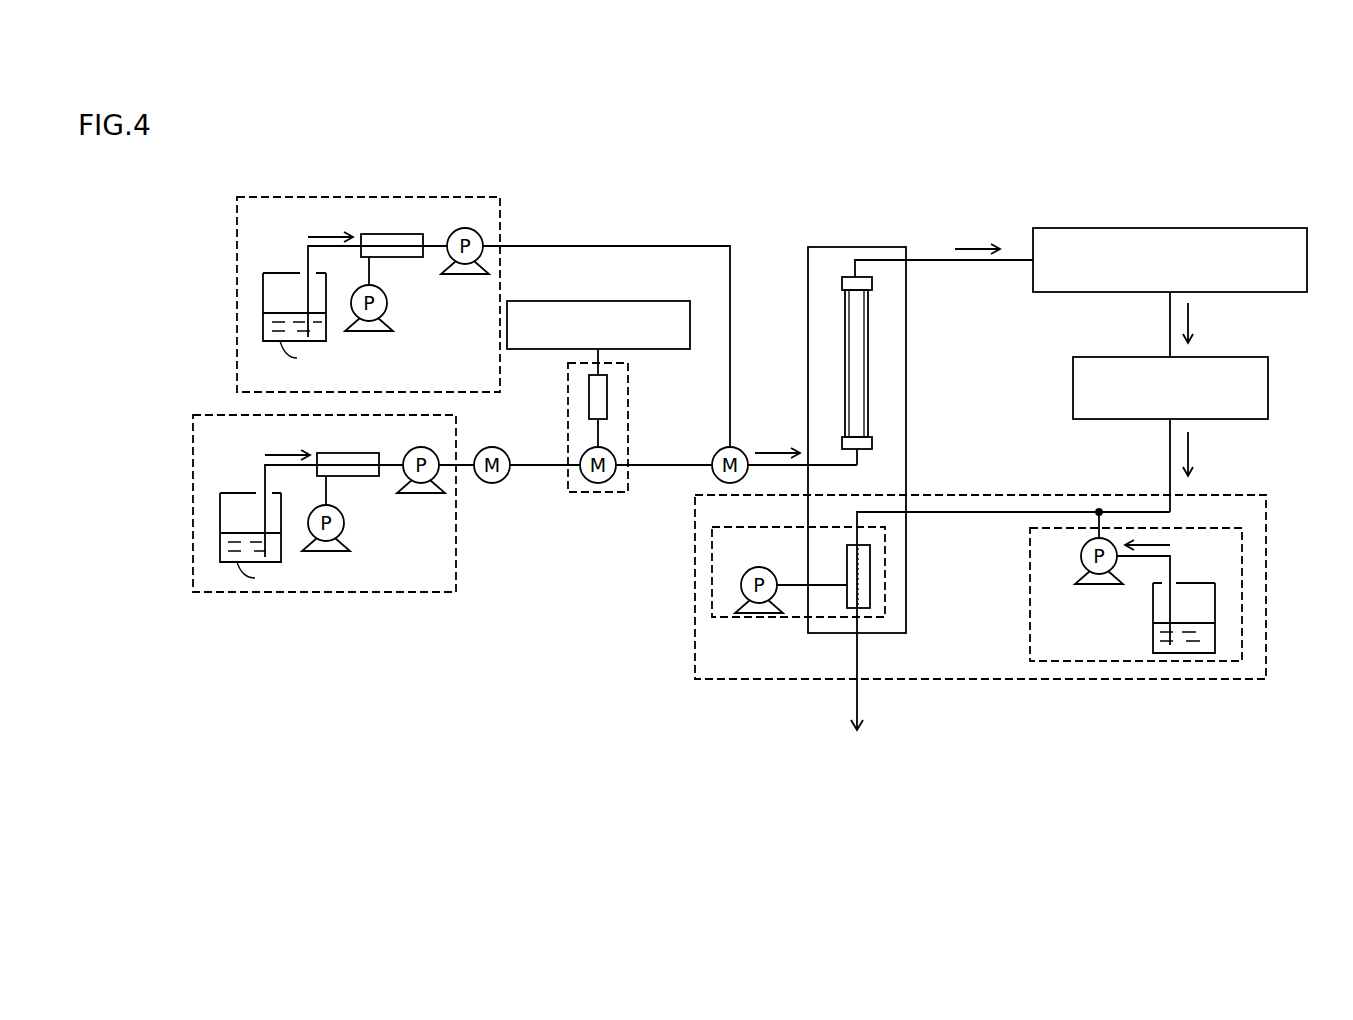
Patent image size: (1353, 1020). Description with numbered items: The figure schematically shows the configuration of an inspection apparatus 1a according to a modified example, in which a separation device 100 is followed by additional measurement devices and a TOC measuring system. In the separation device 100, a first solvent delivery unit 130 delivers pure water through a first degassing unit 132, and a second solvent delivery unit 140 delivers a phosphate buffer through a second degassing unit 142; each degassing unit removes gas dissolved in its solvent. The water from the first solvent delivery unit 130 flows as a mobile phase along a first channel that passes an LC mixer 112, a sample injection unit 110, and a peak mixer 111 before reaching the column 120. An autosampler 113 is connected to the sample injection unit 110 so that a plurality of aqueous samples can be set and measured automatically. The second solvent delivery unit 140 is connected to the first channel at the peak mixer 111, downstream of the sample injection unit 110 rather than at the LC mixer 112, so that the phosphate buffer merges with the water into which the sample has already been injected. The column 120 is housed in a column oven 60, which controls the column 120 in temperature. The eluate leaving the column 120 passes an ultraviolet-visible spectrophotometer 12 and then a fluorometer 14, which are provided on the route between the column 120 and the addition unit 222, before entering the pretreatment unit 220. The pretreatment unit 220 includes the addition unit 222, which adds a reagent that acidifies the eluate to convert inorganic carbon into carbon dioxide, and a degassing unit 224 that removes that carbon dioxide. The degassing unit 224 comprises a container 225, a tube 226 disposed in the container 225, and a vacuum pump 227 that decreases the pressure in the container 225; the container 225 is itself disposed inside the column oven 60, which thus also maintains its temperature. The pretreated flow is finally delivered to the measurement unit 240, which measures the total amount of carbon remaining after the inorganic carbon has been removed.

The inspection apparatus 1a is at (1320, 177).
The separation device 100 is at (176, 244).
The second solvent delivery unit 140 is at (412, 197).
The second degassing unit 142 is at (390, 234).
The first solvent delivery unit 130 is at (400, 592).
The first degassing unit 132 is at (346, 453).
The LC mixer 112 is at (492, 483).
The autosampler 113 is at (620, 301).
The sample injection unit 110 is at (598, 492).
The peak mixer 111 is at (744, 450).
The column oven 60 is at (880, 247).
The column 120 is at (845, 350).
The ultraviolet-visible spectrophotometer 12 is at (1237, 228).
The fluorometer 14 is at (1237, 357).
The pretreatment unit 220 is at (1266, 537).
The addition unit 222 is at (1030, 632).
The degassing unit 224 is at (795, 617).
The container 225 is at (870, 558).
The tube 226 is at (858, 595).
The vacuum pump 227 is at (772, 572).
The measurement unit 240 is at (858, 741).